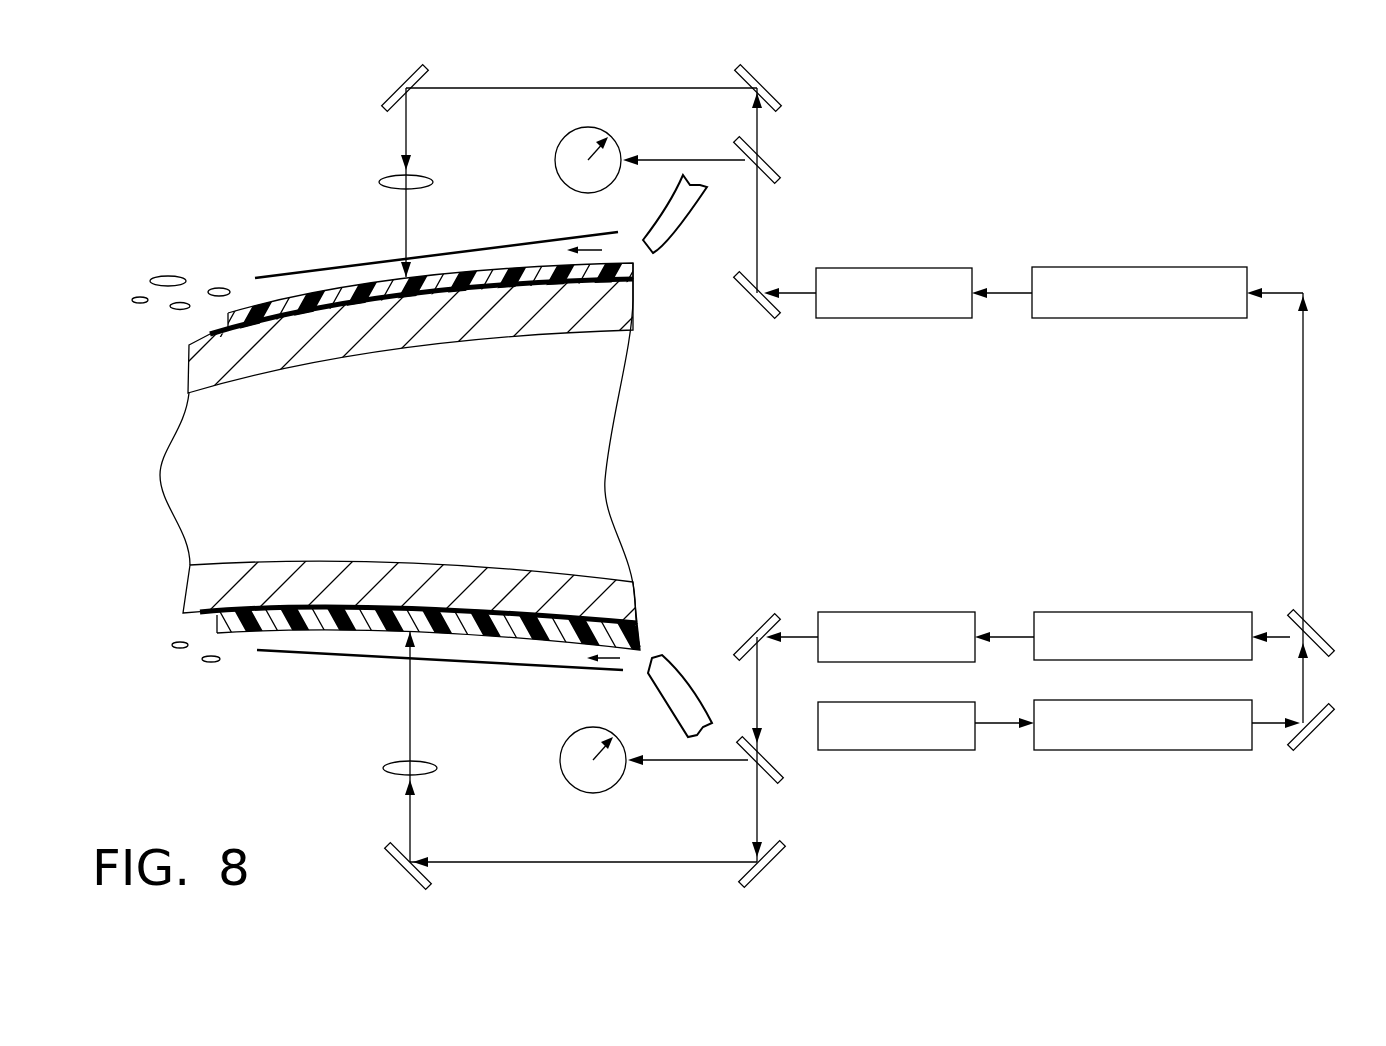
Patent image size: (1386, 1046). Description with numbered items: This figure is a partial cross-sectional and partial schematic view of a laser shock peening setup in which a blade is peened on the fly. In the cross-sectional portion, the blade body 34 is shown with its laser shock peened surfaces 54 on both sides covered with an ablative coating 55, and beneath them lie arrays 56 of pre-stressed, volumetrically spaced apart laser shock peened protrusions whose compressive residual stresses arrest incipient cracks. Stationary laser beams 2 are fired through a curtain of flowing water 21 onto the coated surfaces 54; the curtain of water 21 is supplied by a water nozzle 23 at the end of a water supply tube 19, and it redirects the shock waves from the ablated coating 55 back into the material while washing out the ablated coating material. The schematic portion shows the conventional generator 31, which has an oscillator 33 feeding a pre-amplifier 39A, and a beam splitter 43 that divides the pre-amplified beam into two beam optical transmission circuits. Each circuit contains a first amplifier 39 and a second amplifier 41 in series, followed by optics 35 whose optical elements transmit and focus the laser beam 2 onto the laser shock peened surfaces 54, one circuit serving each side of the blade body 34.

The laser beam 2 is at (407, 218).
The water supply tube 19 is at (690, 688).
The curtain of flowing water 21 is at (518, 655).
The water nozzle 23 is at (657, 673).
The generator 31 is at (1025, 464).
The oscillator 33 is at (925, 750).
The conduit wall 34 is at (443, 464).
The optics 35 is at (793, 142).
The first amplifier 39 is at (1125, 267).
The pre-amplifier 39A is at (1100, 750).
The second amplifier 41 is at (867, 268).
The beam splitter 43 is at (1357, 699).
The laser shock peened surface 54 is at (196, 340).
The ablative coating 55 is at (236, 642).
The array of laser shock peened protrusions 56 is at (377, 573).